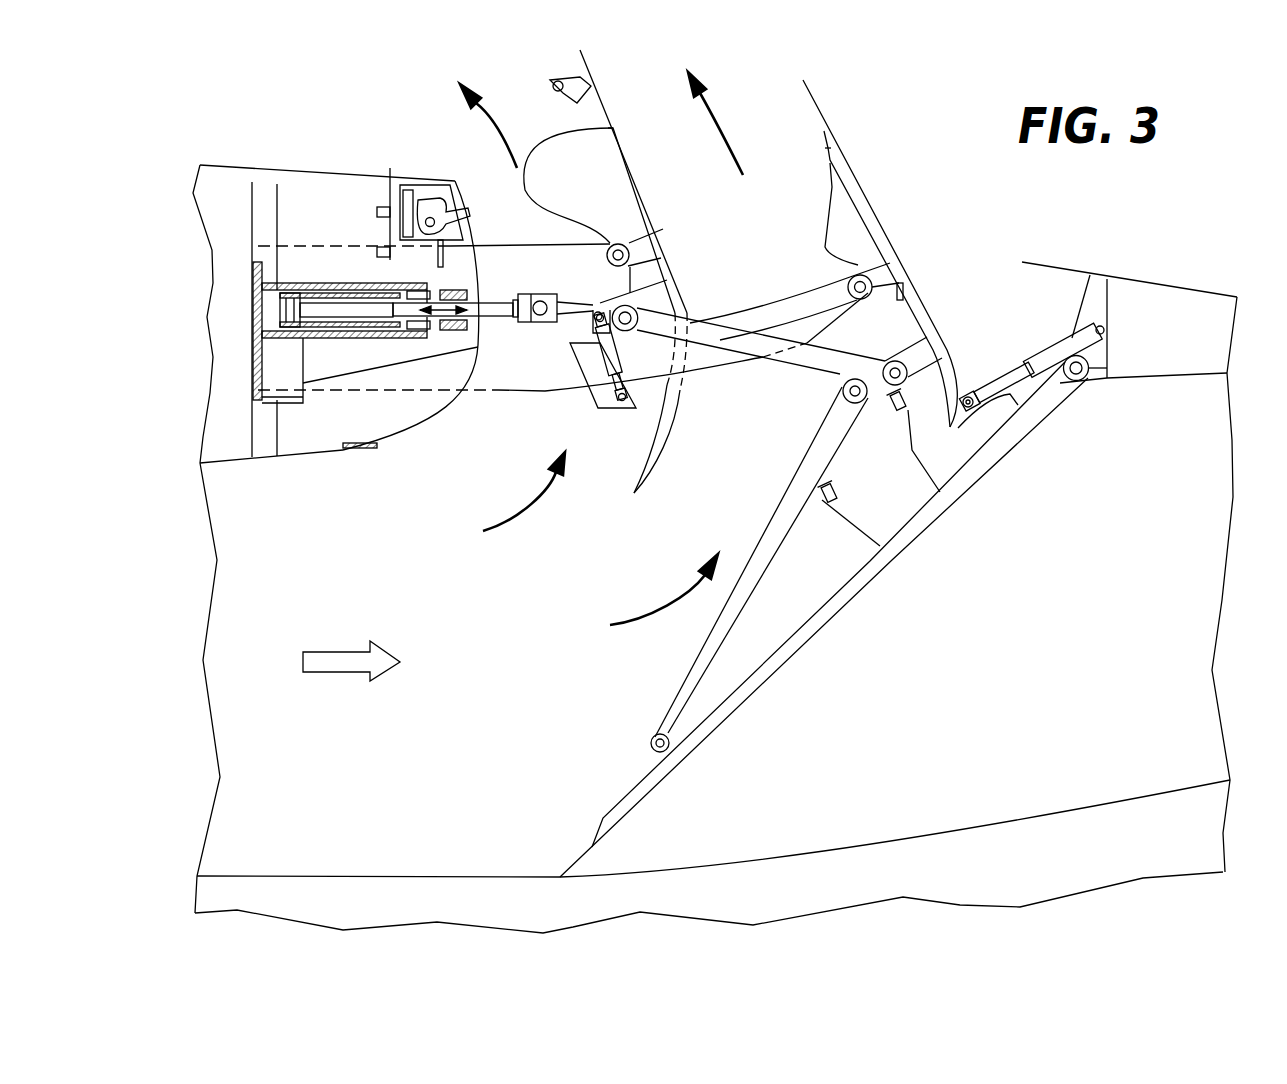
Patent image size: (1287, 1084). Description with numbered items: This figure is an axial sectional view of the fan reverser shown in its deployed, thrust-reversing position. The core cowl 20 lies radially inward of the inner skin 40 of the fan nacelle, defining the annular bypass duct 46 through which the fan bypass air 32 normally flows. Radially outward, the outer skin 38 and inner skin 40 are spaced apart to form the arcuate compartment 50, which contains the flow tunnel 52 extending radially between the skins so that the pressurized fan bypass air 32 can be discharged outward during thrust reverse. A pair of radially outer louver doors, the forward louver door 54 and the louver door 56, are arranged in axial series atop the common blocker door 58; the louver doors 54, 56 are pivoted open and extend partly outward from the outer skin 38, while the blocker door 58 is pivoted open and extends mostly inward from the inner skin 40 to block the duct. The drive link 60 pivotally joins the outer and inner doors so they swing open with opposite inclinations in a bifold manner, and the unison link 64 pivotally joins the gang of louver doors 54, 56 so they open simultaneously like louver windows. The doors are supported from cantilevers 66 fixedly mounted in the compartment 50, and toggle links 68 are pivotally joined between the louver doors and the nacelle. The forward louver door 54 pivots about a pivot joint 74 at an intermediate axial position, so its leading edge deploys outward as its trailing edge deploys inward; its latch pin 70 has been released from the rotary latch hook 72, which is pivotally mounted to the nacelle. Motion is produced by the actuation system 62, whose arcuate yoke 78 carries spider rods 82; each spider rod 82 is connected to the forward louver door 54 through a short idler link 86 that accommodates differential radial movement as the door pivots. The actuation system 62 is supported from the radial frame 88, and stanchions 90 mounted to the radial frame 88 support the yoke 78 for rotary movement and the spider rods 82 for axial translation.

The core cowl 20 is at (1129, 857).
The fan bypass air 32 is at (338, 646).
The outer skin 38 is at (1143, 280).
The inner skin 40 is at (1150, 377).
The bypass duct 46 is at (398, 784).
The compartment 50 is at (239, 321).
The flow tunnel 52 is at (734, 292).
The forward louver door 54 is at (634, 170).
The louver door 56 is at (871, 197).
The blocker door 58 is at (880, 575).
The drive link 60 is at (800, 545).
The actuation system 62 is at (326, 256).
The unison link 64 is at (803, 368).
The cantilever 66 is at (556, 282).
The toggle link 68 is at (633, 405).
The latch pin 70 is at (550, 80).
The rotary latch hook 72 is at (431, 207).
The pivot joint 74 is at (658, 235).
The yoke 78 is at (331, 332).
The spider rod 82 is at (502, 333).
The idler link 86 is at (566, 325).
The radial frame 88 is at (253, 432).
The stanchion 90 is at (287, 358).